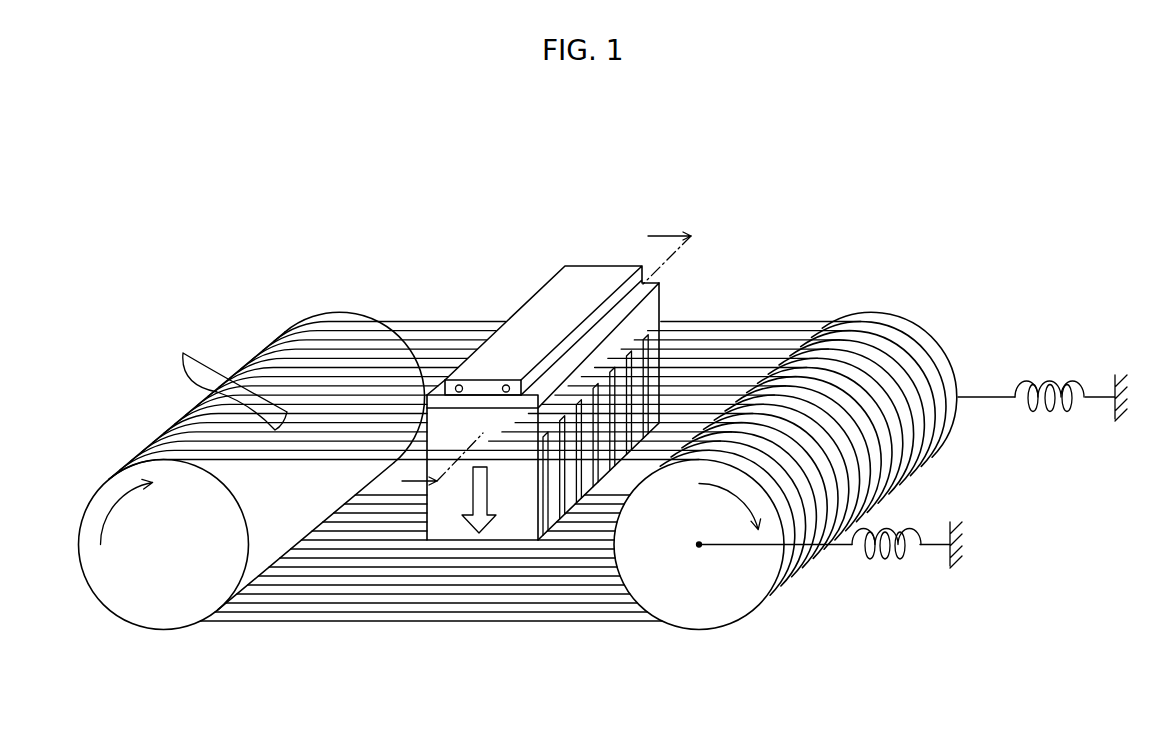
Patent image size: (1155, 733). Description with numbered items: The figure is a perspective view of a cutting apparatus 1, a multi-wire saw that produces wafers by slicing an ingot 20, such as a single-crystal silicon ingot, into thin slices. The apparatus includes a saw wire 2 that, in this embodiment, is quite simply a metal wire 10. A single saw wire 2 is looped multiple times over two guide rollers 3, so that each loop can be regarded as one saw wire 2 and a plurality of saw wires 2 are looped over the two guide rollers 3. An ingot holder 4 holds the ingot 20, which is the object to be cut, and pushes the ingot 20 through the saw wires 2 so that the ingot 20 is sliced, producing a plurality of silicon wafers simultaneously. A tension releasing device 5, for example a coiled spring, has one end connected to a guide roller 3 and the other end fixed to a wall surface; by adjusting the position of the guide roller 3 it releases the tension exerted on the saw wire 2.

The cutting apparatus 1 is at (893, 243).
The saw wire 2 is at (485, 472).
The metal wire 10 is at (485, 472).
The guide roller 3 is at (136, 598).
The ingot holder 4 is at (552, 284).
The tension releasing device 5 is at (1040, 382).
The ingot 20 is at (448, 525).